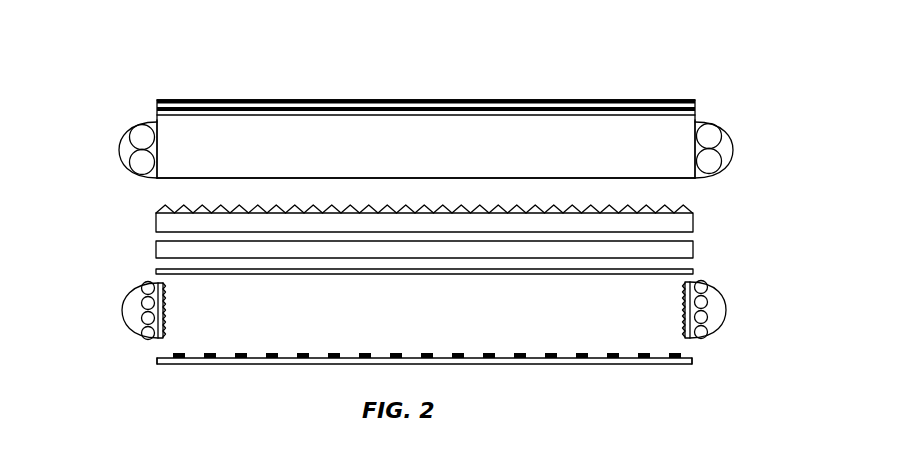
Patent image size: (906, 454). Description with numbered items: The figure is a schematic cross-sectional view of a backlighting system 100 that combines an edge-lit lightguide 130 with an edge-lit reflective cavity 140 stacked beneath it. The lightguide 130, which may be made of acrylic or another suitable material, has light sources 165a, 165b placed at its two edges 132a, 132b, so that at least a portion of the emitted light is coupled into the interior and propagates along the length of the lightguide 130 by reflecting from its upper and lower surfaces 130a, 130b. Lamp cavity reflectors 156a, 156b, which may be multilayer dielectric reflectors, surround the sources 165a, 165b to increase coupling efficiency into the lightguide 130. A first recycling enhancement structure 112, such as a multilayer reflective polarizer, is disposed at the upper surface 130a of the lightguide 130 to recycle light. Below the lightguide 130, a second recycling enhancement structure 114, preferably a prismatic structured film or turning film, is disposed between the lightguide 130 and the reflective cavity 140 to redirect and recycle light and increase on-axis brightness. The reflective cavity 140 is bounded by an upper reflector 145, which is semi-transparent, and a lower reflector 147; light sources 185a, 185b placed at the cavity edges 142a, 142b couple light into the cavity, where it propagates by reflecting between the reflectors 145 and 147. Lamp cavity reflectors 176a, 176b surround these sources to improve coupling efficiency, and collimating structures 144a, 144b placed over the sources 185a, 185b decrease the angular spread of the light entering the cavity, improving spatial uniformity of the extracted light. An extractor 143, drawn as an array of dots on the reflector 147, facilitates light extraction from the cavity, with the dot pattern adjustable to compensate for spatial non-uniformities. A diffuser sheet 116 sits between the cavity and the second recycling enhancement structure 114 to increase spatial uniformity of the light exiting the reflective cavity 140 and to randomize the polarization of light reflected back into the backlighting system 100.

The backlighting system 100 is at (583, 54).
The first recycling enhancement structure 112 is at (638, 96).
The lightguide 130 is at (697, 178).
The surface of lightguide 130a is at (290, 112).
The surface of lightguide 130b is at (186, 180).
The edge of lightguide 132a is at (697, 122).
The edge of lightguide 132b is at (148, 177).
The lamp cavity reflector 156a is at (723, 130).
The lamp cavity reflector 156b is at (148, 123).
The light source 165a is at (717, 136).
The light source 165b is at (140, 137).
The second recycling enhancement structure 114 is at (696, 220).
The diffuser sheet 116 is at (690, 248).
The reflector 145 is at (694, 271).
The reflective cavity 140 is at (261, 320).
The edge of reflective cavity 142a is at (696, 356).
The edge of reflective cavity 142b is at (152, 356).
The extractor 143 is at (494, 343).
The reflector 147 is at (596, 364).
The collimating structure 144a is at (692, 342).
The collimating structure 144b is at (160, 343).
The lamp cavity reflector 176a is at (726, 318).
The lamp cavity reflector 176b is at (131, 290).
The light source 185a is at (710, 305).
The light source 185b is at (138, 316).